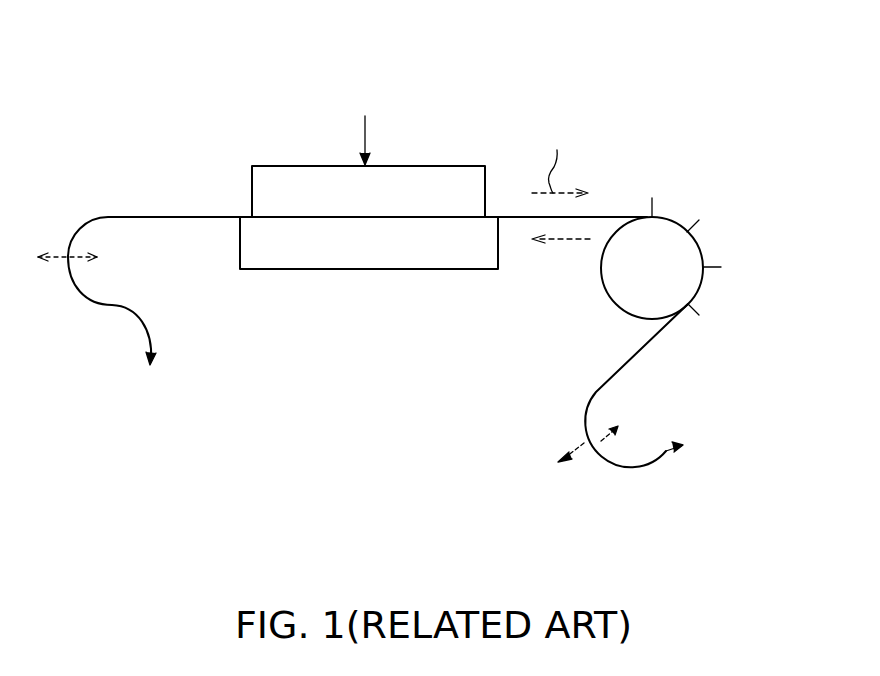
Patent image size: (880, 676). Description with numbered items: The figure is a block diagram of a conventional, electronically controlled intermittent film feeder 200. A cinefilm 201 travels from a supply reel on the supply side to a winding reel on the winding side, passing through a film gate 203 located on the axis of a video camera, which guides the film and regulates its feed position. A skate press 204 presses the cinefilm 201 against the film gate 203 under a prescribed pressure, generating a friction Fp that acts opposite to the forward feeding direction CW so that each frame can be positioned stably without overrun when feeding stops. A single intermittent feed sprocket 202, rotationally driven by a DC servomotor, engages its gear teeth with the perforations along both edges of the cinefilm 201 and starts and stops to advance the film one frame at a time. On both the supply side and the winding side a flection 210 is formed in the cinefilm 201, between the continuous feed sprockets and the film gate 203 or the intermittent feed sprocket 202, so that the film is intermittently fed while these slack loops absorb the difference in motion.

The intermittent film feeder 200 is at (89, 84).
The cinefilm 201 is at (152, 217).
The intermittent feed sprocket 202 is at (672, 216).
The film gate 203 is at (451, 269).
The skate press 204 is at (454, 166).
The flection 210 is at (75, 280).